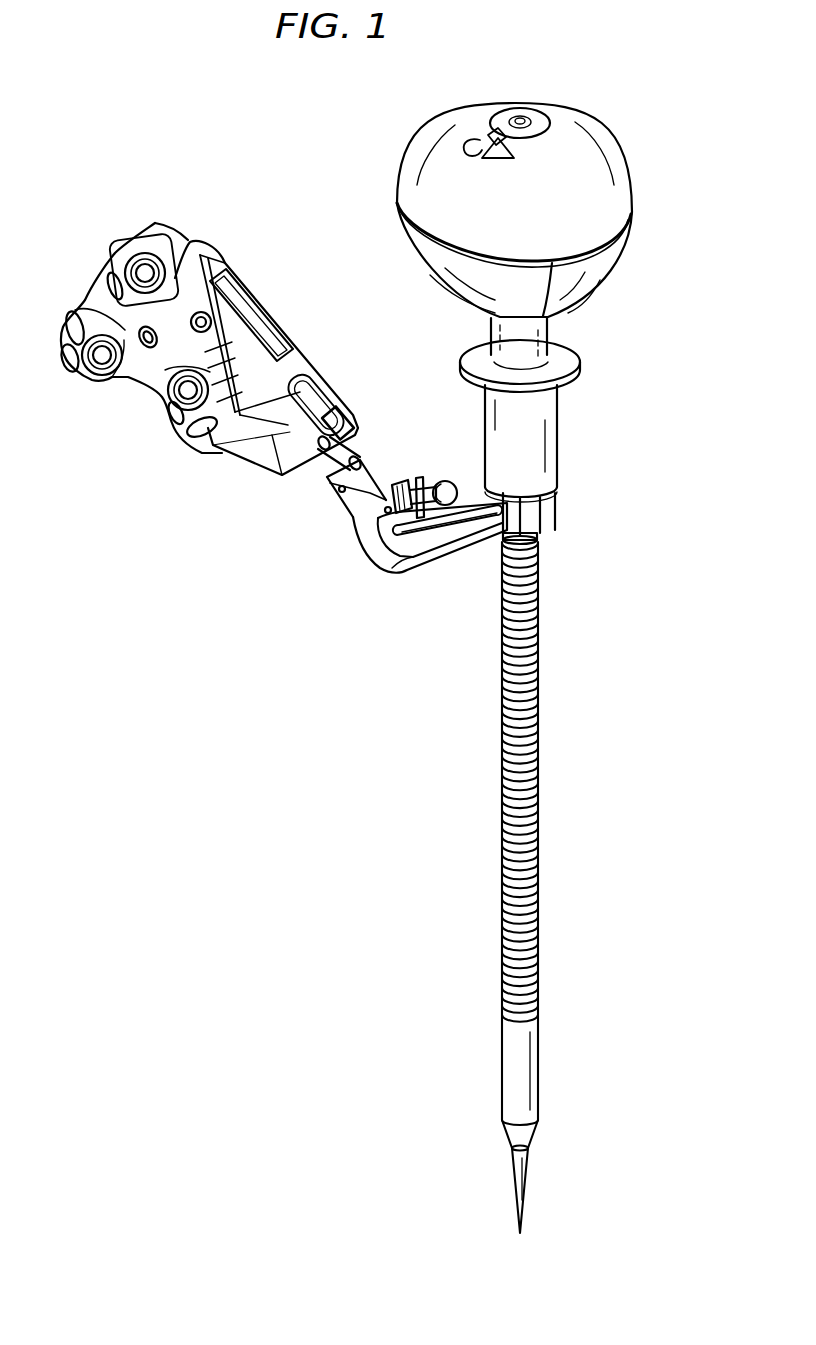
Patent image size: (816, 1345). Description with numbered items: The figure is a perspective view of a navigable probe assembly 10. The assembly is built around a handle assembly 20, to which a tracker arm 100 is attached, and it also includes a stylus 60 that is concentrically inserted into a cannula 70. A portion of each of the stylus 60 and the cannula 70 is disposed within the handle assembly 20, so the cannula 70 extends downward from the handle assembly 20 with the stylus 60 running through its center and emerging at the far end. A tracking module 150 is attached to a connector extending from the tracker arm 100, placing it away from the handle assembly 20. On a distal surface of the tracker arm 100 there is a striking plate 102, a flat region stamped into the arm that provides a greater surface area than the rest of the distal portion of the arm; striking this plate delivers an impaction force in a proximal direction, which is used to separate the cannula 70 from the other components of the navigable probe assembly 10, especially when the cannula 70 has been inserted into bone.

The navigable probe assembly 10 is at (258, 127).
The handle assembly 20 is at (683, 105).
The stylus 60 is at (524, 1225).
The cannula 70 is at (537, 783).
The tracker arm 100 is at (367, 564).
The striking plate 102 is at (468, 558).
The tracking module 150 is at (129, 407).